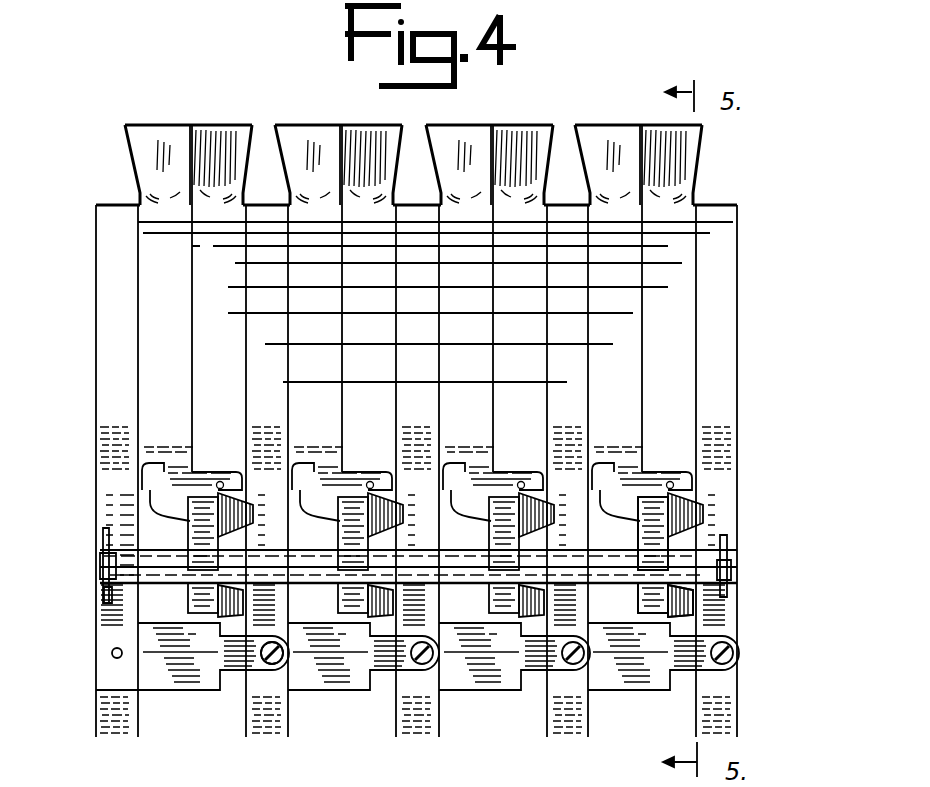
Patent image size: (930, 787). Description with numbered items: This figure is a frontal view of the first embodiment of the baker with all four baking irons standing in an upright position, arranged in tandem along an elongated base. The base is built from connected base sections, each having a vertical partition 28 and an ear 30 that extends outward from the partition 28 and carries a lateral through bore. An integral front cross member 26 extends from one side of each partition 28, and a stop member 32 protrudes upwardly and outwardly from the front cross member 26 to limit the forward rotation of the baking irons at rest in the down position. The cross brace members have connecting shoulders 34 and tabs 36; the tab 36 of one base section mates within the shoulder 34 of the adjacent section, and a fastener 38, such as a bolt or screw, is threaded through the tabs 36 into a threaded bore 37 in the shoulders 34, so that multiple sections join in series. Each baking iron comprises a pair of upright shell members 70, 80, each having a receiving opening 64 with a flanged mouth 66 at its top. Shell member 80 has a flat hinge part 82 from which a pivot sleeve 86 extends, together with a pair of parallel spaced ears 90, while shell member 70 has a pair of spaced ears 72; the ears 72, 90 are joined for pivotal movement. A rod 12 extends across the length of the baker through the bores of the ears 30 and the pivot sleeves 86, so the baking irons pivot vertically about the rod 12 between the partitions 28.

The rod 12 is at (100, 565).
The front cross member 26 is at (648, 668).
The vertical partition 28 is at (722, 280).
The ear 30 is at (125, 515).
The stop member 32 is at (655, 620).
The connecting shoulder 34 is at (133, 645).
The tab 36 is at (243, 668).
The threaded bore 37 is at (112, 655).
The fastener 38 is at (272, 668).
The receiving opening 64 is at (205, 112).
The flanged mouth 66 is at (645, 135).
The shell member 70 is at (685, 337).
The ears 72 is at (683, 506).
The shell member 80 is at (618, 260).
The hinge part 82 is at (643, 548).
The pivot sleeve 86 is at (723, 533).
The ears 90 is at (683, 600).